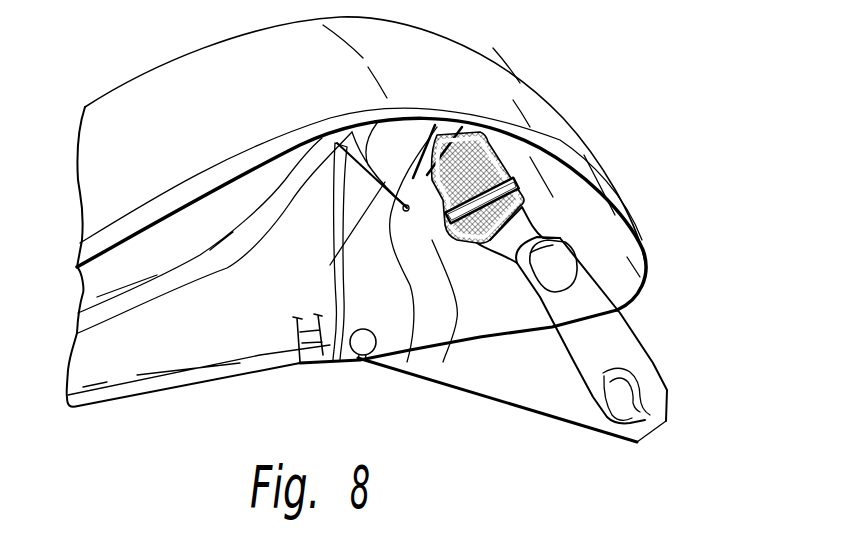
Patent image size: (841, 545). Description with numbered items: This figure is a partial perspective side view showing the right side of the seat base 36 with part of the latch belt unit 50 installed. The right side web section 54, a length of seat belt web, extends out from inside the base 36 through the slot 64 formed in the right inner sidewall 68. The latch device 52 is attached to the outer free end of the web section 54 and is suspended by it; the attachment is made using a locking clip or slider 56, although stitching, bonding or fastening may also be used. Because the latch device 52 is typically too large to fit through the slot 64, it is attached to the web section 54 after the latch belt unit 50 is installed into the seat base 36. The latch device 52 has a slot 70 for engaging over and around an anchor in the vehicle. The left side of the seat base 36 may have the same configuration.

The seat base 36 is at (160, 86).
The latch belt unit 50 is at (551, 215).
The latch device 52 is at (622, 345).
The web section 54 is at (478, 165).
The locking clip 56 is at (518, 182).
The slot 64 is at (405, 362).
The inner sidewall 68 is at (443, 362).
The slot 70 is at (635, 450).